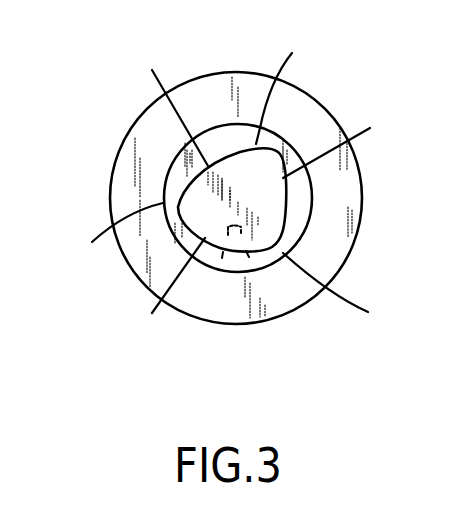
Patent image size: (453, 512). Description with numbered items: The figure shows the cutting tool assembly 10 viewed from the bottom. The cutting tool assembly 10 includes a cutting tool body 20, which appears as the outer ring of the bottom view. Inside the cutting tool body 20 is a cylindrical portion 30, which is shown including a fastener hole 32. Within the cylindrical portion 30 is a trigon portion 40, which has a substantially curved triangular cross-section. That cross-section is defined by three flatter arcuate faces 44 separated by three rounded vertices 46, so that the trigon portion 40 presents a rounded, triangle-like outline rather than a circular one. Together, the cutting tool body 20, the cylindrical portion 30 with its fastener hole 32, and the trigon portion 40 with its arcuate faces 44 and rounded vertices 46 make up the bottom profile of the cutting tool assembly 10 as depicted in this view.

The cutting tool assembly 10 is at (88, 53).
The cutting tool body 20 is at (325, 102).
The cylindrical portion 30 is at (313, 197).
The fastener hole 32 is at (226, 272).
The trigon portion 40 is at (257, 250).
The flatter arcuate faces 44 is at (262, 187).
The rounded vertices 46 is at (231, 182).